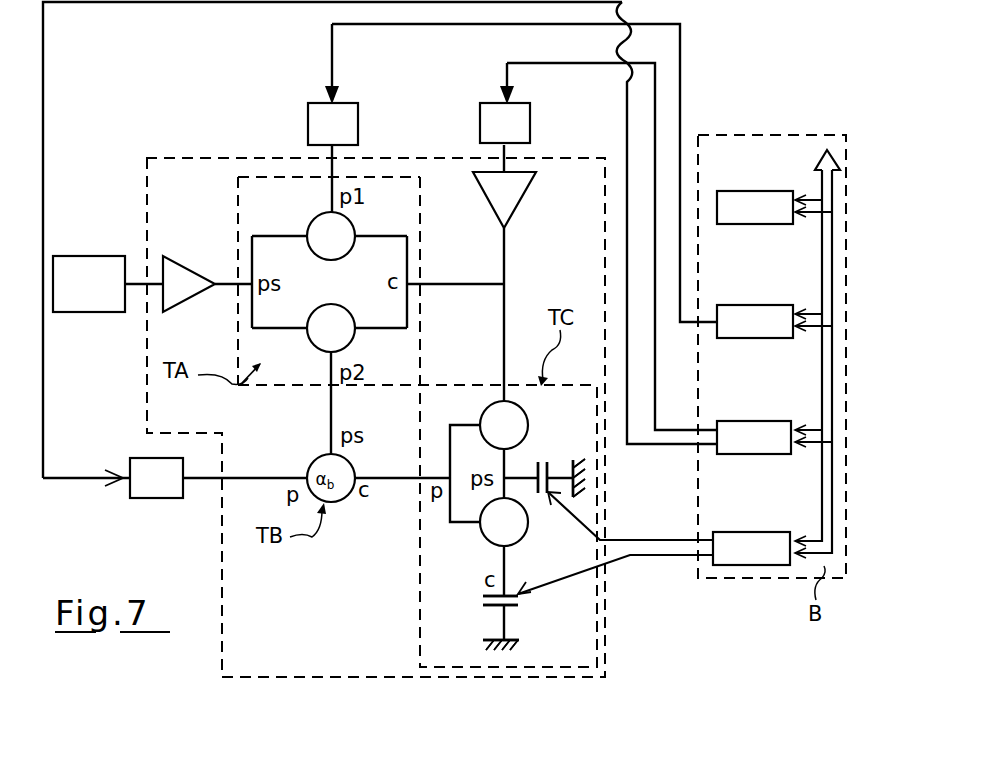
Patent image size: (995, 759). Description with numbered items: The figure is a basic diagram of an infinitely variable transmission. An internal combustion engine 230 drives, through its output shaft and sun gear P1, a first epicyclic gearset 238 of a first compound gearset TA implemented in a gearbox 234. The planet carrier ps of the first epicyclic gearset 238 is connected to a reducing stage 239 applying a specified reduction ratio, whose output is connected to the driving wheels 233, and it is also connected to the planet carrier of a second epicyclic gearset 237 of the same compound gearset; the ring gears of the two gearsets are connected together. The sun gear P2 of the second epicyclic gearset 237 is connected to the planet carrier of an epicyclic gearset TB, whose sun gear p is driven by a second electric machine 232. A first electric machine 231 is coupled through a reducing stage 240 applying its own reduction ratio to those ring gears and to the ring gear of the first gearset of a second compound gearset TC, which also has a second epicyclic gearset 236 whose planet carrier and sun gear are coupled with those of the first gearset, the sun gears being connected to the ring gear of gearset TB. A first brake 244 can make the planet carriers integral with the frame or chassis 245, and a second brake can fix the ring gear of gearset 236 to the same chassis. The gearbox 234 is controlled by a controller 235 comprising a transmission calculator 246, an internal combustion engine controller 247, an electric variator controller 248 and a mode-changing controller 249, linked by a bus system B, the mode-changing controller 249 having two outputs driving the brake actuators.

The internal combustion engine 230 is at (316, 104).
The first electric machine 231 is at (490, 103).
The second electric machine 232 is at (162, 500).
The driving wheels 233 is at (90, 256).
The gearbox 234 is at (203, 152).
The controller 235 is at (745, 128).
The second epicyclic gearset 236 is at (470, 552).
The second epicyclic gearset 237 is at (352, 340).
The first epicyclic gearset 238 is at (314, 224).
The reducing stage 239 is at (195, 264).
The reducing stage 240 is at (524, 184).
The first brake 244 is at (542, 462).
The frame or chassis 245 is at (586, 478).
The transmission calculator 246 is at (755, 207).
The internal combustion engine controller 247 is at (755, 321).
The electric variator controller 248 is at (754, 437).
The mode-changing controller 249 is at (654, 543).